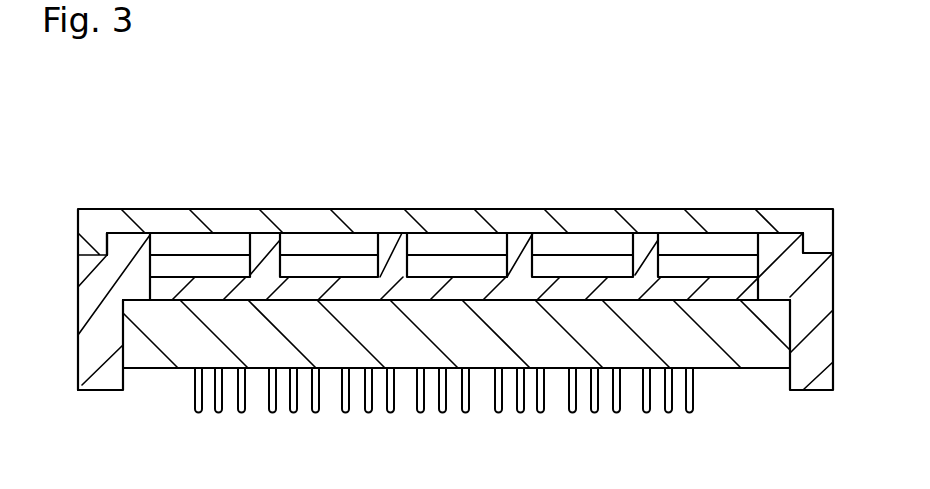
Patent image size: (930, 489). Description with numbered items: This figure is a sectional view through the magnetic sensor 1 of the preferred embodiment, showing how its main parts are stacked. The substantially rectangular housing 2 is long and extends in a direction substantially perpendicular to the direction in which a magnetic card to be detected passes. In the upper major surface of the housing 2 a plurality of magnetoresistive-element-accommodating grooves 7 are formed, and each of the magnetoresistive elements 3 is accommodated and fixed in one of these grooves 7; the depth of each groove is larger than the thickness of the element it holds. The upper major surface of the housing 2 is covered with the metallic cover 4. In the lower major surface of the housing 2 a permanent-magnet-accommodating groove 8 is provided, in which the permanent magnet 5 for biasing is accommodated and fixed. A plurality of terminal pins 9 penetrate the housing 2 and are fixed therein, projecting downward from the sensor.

The magnetic sensor 1 is at (788, 206).
The housing 2 is at (85, 305).
The magnetoresistive elements 3 is at (216, 262).
The metallic cover 4 is at (93, 222).
The permanent magnet 5 is at (755, 352).
The magnetoresistive-element-accommodating grooves 7 is at (153, 242).
The permanent-magnet-accommodating groove 8 is at (125, 340).
The terminal pins 9 is at (465, 412).